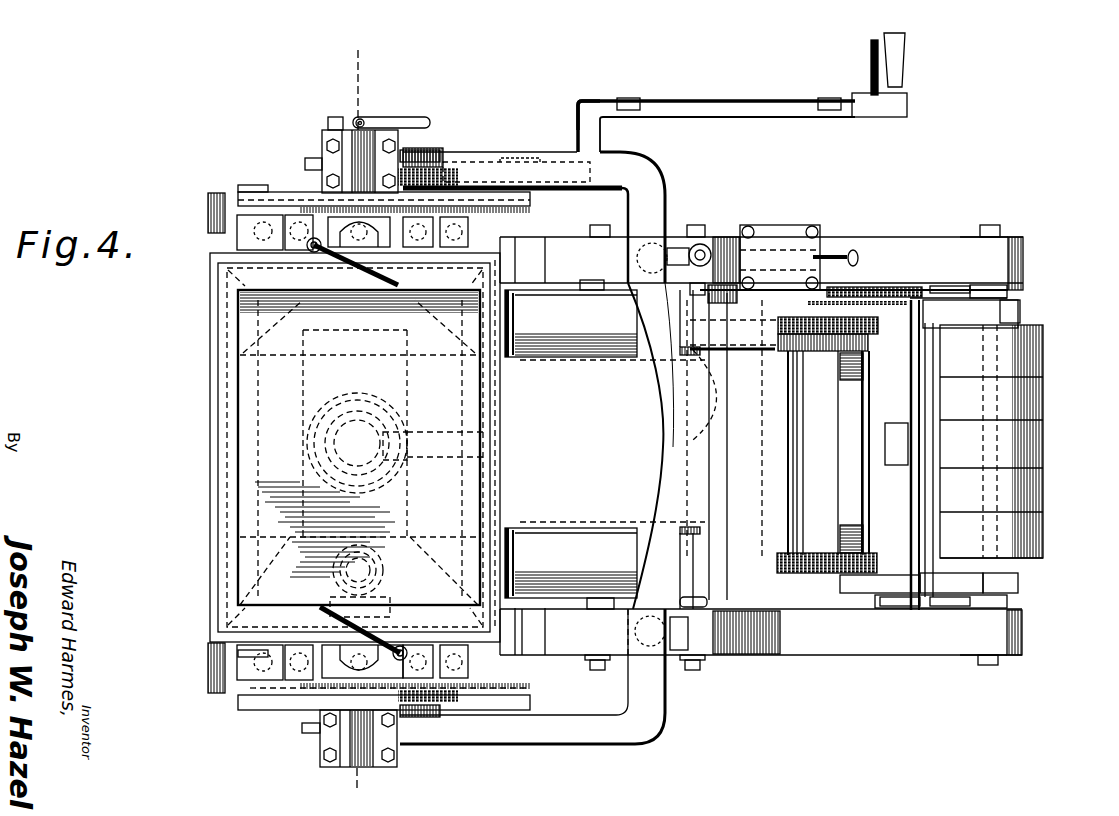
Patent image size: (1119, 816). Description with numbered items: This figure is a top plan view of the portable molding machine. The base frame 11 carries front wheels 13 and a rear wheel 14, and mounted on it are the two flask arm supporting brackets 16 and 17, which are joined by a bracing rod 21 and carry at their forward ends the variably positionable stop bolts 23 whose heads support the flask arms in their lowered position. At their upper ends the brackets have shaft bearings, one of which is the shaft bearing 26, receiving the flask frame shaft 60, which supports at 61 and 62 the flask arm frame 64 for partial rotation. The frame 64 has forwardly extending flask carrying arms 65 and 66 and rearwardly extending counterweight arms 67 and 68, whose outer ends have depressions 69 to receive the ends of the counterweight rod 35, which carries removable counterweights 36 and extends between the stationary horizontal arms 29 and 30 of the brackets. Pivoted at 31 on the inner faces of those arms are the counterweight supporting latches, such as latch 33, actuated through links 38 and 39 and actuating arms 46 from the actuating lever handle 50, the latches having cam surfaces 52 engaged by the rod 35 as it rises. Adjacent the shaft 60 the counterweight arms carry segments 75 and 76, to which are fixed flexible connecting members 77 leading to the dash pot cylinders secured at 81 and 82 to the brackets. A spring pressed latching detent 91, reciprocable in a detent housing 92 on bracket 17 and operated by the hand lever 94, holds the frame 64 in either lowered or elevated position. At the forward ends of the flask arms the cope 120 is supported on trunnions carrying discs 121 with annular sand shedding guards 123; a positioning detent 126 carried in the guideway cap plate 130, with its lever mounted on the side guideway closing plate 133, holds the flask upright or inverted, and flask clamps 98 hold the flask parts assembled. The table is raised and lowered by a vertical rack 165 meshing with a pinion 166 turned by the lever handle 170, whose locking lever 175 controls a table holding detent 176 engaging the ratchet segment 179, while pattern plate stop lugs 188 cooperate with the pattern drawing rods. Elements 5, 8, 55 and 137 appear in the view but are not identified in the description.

The section line 5 is at (358, 420).
The lower roller 8 is at (560, 538).
The base frame 11 is at (525, 650).
The front wheels 13 is at (215, 193).
The rear wheel 14 is at (893, 465).
The flask arm supporting bracket 16 is at (845, 640).
The flask arm supporting bracket 17 is at (535, 250).
The bracing rod 21 is at (716, 470).
The stop bolt 23 is at (660, 240).
The shaft bearing 26 is at (790, 655).
The horizontal arm 29 is at (950, 640).
The horizontal arm 30 is at (945, 237).
The latch pivot 31 is at (985, 585).
The counterweight supporting latch 33 is at (1008, 294).
The counterweight rod 35 is at (1020, 315).
The removable counterweights 36 is at (1044, 420).
The link 38 is at (942, 606).
The link 39 is at (960, 285).
The actuating arm 46 is at (895, 606).
The actuating lever handle 50 is at (585, 346).
The cam surface 52 is at (1008, 603).
The roller shaft end 55 is at (1005, 562).
The flask frame shaft 60 is at (780, 430).
The flask arm frame support 61 is at (595, 291).
The flask arm frame support 62 is at (767, 350).
The flask arm frame 64 is at (661, 450).
The flask carrying arm 65 is at (575, 744).
The flask carrying arm 66 is at (505, 150).
The counterweight arm 67 is at (887, 580).
The counterweight arm 68 is at (965, 320).
The depression 69 is at (1018, 583).
The segment 75 is at (835, 560).
The segment 76 is at (868, 344).
The flexible connecting member 77 is at (878, 325).
The cylinder securing point 81 is at (598, 598).
The cylinder securing point 82 is at (690, 262).
The latching detent 91 is at (708, 247).
The detent housing 92 is at (775, 228).
The operating hand lever 94 is at (855, 250).
The flask clamp 98 is at (308, 247).
The cope 120 is at (210, 430).
The disc 121 is at (280, 192).
The annular sand shedding guard 123 is at (545, 704).
The positioning detent 126 is at (362, 118).
The guideway cap plate 130 is at (400, 140).
The side guideway closing plate 133 is at (334, 117).
The clamp handle 137 is at (400, 117).
The vertical rack 165 is at (384, 440).
The pinion 166 is at (500, 427).
The table raising and lowering lever handle 170 is at (795, 115).
The locking lever 175 is at (579, 103).
The table holding detent 176 is at (520, 162).
The ratchet segment 179 is at (445, 165).
The pattern plate stop lug 188 is at (300, 215).